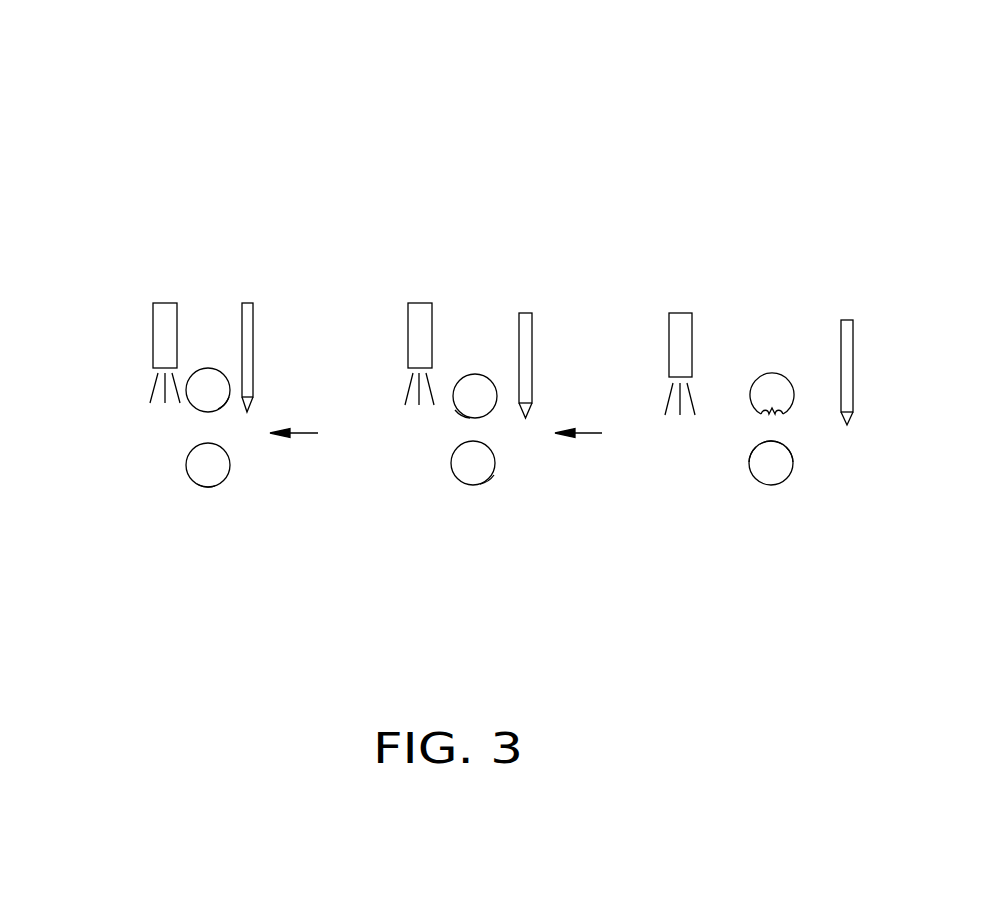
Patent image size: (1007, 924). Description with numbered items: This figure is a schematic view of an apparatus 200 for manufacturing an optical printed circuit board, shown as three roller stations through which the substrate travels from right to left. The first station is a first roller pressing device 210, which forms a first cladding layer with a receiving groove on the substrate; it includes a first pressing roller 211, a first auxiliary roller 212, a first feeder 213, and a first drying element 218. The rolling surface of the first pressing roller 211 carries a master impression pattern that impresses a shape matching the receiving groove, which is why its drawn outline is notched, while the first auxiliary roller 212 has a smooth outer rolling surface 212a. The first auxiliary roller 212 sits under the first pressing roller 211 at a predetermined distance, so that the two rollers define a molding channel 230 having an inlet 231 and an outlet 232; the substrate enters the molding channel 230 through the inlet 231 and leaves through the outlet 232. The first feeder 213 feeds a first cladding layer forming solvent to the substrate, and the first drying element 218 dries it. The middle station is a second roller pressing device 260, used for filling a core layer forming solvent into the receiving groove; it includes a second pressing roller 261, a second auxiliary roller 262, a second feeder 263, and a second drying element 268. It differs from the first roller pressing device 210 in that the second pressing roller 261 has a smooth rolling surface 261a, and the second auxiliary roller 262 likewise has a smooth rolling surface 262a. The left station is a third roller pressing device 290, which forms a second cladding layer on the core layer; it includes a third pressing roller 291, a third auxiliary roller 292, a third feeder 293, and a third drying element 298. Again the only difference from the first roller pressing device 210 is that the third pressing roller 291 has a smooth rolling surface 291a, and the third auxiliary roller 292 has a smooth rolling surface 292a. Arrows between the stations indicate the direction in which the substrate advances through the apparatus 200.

The apparatus 200 is at (483, 72).
The third roller pressing device 290 is at (175, 205).
The third pressing roller 291 is at (210, 380).
The smooth rolling surface 291a is at (222, 408).
The third auxiliary roller 292 is at (205, 465).
The smooth rolling surface 292a is at (202, 483).
The third feeder 293 is at (242, 302).
The third drying element 298 is at (165, 318).
The second roller pressing device 260 is at (607, 222).
The second pressing roller 261 is at (475, 392).
The smooth rolling surface 261a is at (460, 413).
The second auxiliary roller 262 is at (473, 468).
The smooth rolling surface 262a is at (488, 482).
The second feeder 263 is at (527, 315).
The second drying element 268 is at (418, 318).
The first roller pressing device 210 is at (870, 253).
The first pressing roller 211 is at (772, 383).
The first auxiliary roller 212 is at (770, 450).
The smooth outer rolling surface 212a is at (767, 442).
The first feeder 213 is at (847, 325).
The first drying element 218 is at (680, 325).
The molding channel 230 is at (842, 553).
The inlet 231 is at (792, 435).
The outlet 232 is at (748, 438).